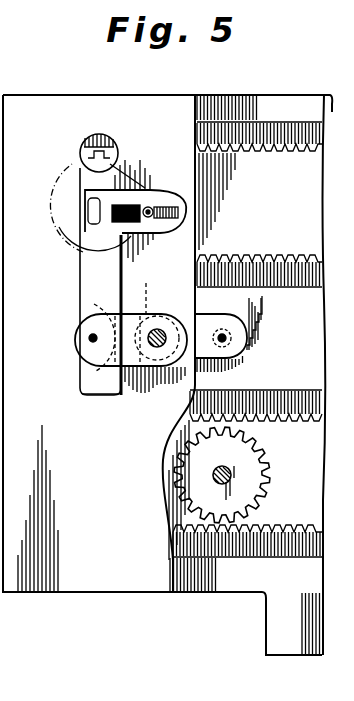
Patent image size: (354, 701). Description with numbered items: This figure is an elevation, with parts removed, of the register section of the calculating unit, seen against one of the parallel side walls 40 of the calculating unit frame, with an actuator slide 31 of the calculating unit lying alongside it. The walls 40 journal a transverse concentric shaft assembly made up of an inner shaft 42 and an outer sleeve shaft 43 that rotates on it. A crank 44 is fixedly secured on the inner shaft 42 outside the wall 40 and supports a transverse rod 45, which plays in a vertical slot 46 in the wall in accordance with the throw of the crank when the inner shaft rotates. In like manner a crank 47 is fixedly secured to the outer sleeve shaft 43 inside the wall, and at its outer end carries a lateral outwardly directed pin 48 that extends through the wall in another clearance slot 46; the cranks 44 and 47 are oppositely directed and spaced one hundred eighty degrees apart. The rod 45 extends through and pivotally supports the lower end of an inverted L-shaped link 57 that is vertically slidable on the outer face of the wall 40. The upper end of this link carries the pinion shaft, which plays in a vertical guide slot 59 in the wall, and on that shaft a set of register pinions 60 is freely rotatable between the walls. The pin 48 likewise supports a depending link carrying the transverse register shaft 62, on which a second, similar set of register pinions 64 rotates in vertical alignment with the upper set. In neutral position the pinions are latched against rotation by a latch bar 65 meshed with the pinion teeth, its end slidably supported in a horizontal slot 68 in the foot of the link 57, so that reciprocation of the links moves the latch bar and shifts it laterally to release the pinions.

The side wall 40 is at (117, 99).
The actuator slide 31 is at (283, 156).
The register pinion 60 is at (79, 164).
The vertical guide slot 59 is at (70, 237).
The inverted L-shaped link 57 is at (80, 281).
The latch bar 65 is at (141, 209).
The horizontal slot 68 is at (160, 212).
The vertical slot 46 is at (75, 319).
The transverse rod 45 is at (91, 339).
The inner shaft 42 is at (160, 330).
The outer sleeve shaft 43 is at (150, 313).
The crank 44 is at (92, 380).
The crank 47 is at (210, 322).
The pin 48 is at (235, 338).
The register pinion 64 is at (250, 465).
The transverse register shaft 62 is at (228, 476).